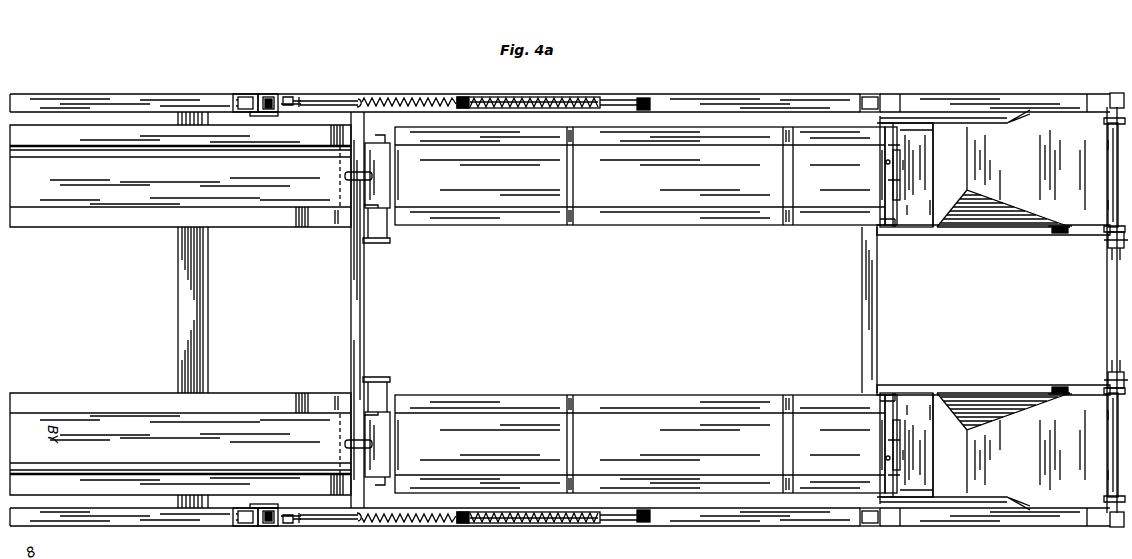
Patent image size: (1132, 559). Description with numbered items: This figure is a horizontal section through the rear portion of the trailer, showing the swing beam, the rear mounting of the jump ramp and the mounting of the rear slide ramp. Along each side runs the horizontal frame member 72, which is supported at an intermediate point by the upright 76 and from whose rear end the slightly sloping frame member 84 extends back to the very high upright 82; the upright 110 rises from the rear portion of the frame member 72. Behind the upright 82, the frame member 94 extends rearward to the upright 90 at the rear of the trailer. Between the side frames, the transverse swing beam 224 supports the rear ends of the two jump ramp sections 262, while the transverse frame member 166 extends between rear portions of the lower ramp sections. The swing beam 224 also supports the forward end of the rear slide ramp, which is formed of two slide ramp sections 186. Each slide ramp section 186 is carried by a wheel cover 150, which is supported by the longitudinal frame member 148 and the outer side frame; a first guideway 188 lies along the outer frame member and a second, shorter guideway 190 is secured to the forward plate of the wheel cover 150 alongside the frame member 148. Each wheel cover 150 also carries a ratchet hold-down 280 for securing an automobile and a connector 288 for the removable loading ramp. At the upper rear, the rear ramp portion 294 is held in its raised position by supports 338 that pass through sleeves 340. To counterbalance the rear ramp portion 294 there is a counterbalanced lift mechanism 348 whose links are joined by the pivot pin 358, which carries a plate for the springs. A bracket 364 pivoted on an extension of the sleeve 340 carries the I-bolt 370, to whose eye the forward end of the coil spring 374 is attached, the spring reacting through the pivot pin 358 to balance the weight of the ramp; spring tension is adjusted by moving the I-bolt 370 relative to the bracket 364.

The horizontal frame member 72 is at (90, 94).
The upright 110 is at (234, 94).
The support 338 is at (265, 94).
The sleeve 340 is at (276, 114).
The bracket 364 is at (292, 98).
The I-bolt 370 is at (346, 98).
The coil spring 374 is at (437, 84).
The counterbalanced lift mechanism 348 is at (482, 72).
The upright 76 is at (618, 98).
The pivot pin 358 is at (634, 96).
The frame member 84 is at (735, 82).
The upright 82 is at (866, 94).
The frame member 94 is at (1052, 78).
The upright 90 is at (1112, 92).
The jump ramp section 262 is at (64, 222).
The transverse frame member 166 is at (210, 280).
The swing beam 224 is at (364, 284).
The rear ramp portion 294 is at (388, 230).
The slide ramp section 186 is at (506, 224).
The second guideway 190 is at (912, 224).
The longitudinal frame member 148 is at (981, 226).
The first guideway 188 is at (972, 123).
The wheel cover 150 is at (1046, 226).
The connector 288 is at (1108, 170).
The ratchet hold-down 280 is at (1114, 242).